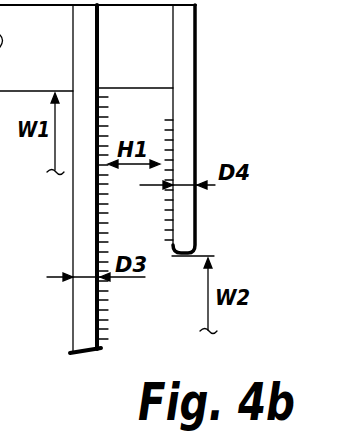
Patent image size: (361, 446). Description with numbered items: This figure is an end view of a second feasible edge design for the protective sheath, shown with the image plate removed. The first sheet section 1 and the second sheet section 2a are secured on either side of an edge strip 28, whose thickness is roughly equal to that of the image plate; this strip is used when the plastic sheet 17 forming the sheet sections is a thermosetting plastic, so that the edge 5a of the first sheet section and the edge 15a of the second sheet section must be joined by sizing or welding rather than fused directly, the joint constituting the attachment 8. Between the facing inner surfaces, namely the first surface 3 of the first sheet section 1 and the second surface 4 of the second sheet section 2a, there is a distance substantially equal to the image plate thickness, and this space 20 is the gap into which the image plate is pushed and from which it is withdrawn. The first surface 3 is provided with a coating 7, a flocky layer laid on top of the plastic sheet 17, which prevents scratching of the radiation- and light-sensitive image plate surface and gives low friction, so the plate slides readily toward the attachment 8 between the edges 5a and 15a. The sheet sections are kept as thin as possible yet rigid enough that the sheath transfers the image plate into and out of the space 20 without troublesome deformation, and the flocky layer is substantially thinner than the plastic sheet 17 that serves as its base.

The first sheet section 1 is at (80, 327).
The second sheet section 2a is at (188, 225).
The first surface 3 is at (99, 327).
The second surface 4 is at (164, 116).
The outer edge of the first sheet section 5a is at (73, 68).
The coating 7 is at (171, 230).
The attachment 8 is at (197, 18).
The edge of the second sheet section 15a is at (187, 58).
The plastic sheet 17 is at (195, 143).
The space 20 is at (130, 208).
The strip 28 is at (153, 50).